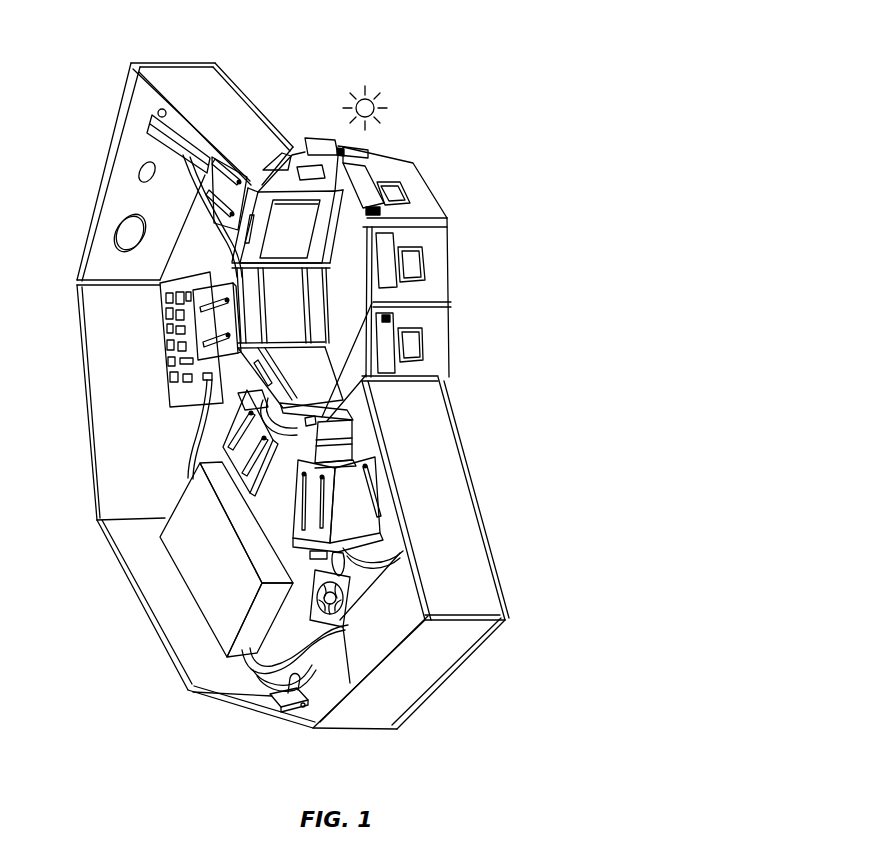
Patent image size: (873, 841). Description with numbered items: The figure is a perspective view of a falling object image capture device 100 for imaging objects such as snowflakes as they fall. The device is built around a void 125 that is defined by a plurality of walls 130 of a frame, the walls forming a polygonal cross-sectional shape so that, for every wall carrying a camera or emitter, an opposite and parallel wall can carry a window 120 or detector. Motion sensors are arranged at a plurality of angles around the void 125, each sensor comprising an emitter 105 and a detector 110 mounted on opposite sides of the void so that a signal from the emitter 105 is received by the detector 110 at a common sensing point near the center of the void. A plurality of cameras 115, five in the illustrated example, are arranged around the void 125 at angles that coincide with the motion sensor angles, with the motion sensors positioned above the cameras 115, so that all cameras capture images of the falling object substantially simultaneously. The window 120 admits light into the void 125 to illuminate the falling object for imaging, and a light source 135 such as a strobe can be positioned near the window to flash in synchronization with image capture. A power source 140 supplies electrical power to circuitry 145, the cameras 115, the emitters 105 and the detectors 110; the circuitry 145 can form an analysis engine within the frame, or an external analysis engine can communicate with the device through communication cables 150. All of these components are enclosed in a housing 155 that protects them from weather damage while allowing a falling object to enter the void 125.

The falling object image capture device 100 is at (428, 86).
The emitter 105 is at (368, 388).
The detector 110 is at (276, 148).
The camera 115 is at (350, 493).
The window 120 is at (413, 268).
The void 125 is at (357, 256).
The walls 130 is at (420, 190).
The light source 135 is at (355, 78).
The power source 140 is at (193, 580).
The circuitry 145 is at (150, 338).
The communication cables 150 is at (157, 117).
The housing 155 is at (229, 95).